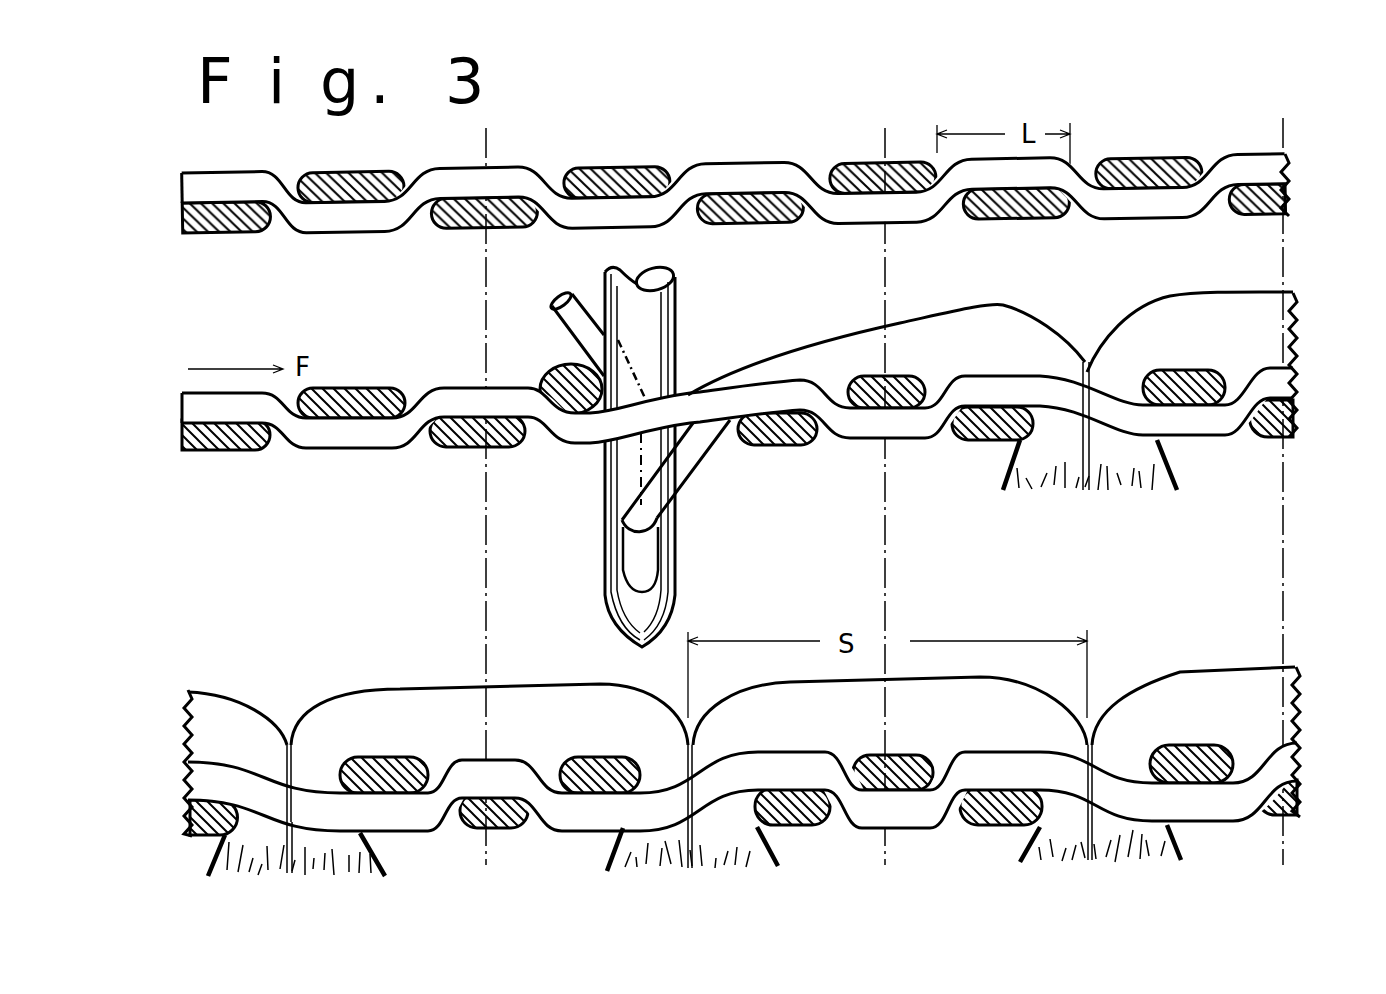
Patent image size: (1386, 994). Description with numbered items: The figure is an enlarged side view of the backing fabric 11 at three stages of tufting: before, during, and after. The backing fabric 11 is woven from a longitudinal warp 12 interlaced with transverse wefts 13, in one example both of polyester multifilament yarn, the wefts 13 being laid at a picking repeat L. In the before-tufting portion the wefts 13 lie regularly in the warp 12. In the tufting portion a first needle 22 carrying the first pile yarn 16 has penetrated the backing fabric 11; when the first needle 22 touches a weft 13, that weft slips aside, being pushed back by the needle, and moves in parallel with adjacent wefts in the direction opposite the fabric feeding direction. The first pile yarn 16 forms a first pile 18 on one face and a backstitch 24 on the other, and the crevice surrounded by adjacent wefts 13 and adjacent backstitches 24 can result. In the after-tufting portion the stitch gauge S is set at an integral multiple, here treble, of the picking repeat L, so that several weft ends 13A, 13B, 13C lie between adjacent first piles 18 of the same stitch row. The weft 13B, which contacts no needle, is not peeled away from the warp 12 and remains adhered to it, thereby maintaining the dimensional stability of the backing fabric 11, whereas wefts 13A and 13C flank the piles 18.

The backing fabric 11 is at (1298, 178).
The warp 12 is at (236, 170).
The weft 13 is at (405, 170).
The weft 13A is at (538, 378).
The weft 13B is at (872, 374).
The weft 13C is at (790, 450).
The first pile yarn 16 is at (553, 300).
The first pile 18 is at (1148, 492).
The first needle 22 is at (682, 331).
The backstitch 24 is at (1022, 306).